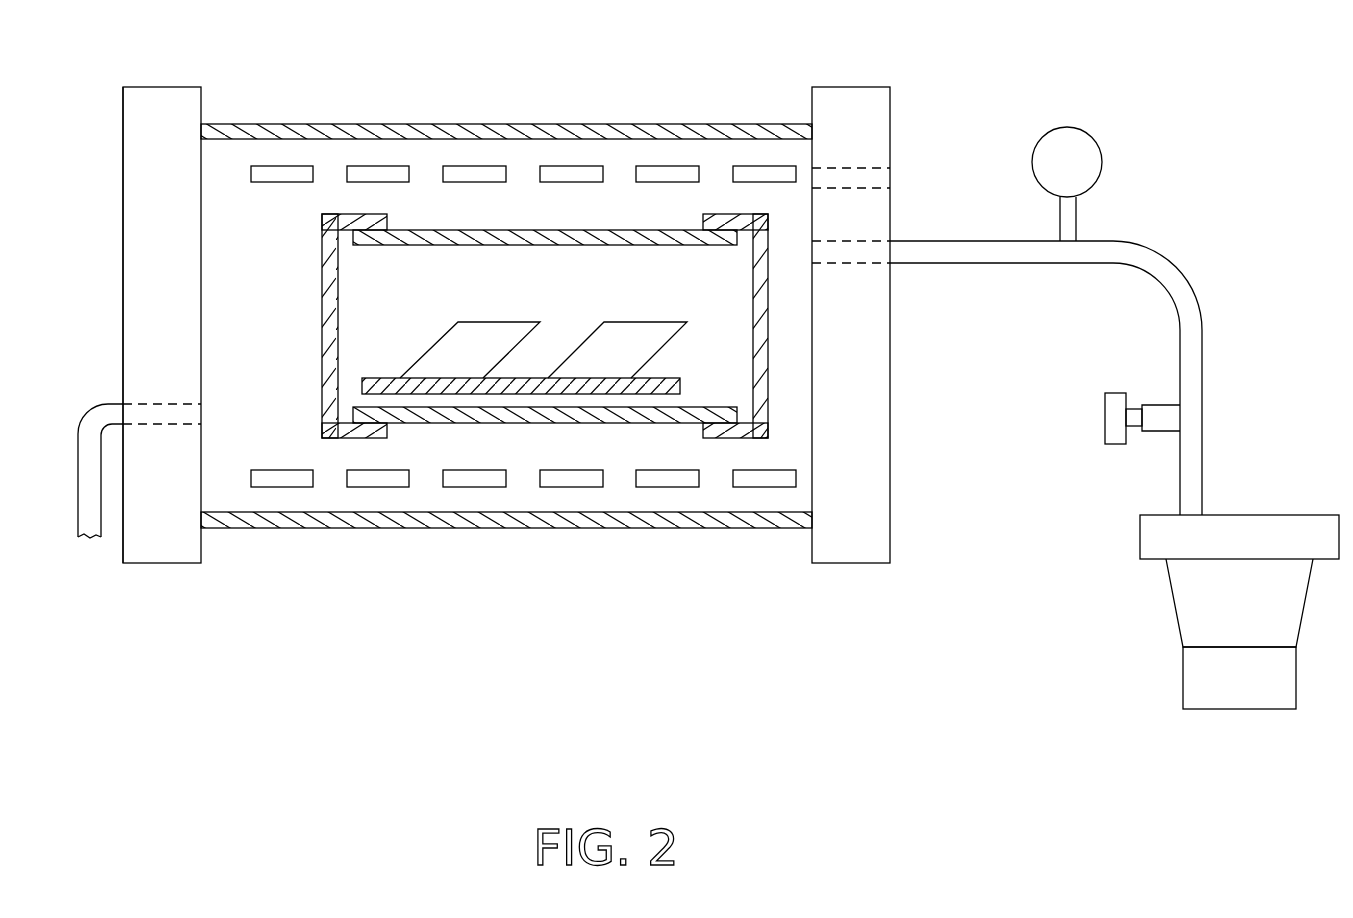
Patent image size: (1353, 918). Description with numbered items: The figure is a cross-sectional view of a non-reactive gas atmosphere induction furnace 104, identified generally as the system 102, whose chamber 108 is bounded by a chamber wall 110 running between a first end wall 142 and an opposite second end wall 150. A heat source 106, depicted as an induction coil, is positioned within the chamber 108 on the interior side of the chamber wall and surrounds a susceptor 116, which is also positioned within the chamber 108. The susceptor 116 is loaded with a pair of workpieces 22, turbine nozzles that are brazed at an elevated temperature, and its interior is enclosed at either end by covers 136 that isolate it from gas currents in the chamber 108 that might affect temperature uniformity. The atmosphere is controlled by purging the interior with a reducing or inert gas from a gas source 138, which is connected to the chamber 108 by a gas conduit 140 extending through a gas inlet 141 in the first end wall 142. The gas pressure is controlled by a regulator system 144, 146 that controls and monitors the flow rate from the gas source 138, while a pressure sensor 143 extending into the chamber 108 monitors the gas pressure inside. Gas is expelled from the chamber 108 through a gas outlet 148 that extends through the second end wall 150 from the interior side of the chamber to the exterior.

The workpieces 22 is at (482, 358).
The furnace apparatus 102 is at (211, 616).
The furnace 104 is at (172, 87).
The heat source 106 is at (365, 165).
The chamber 108 is at (248, 323).
The furnace tube 110 is at (410, 140).
The susceptor 116 is at (608, 415).
The covers 136 is at (322, 270).
The gas source 138 is at (1175, 600).
The gas conduit 140 is at (945, 264).
The gas inlet 141 is at (850, 242).
The first end wall 142 is at (862, 87).
The pressure sensor 143 is at (865, 168).
The regulator system 144 is at (1082, 158).
The regulator system 146 is at (1115, 392).
The gas outlet 148 is at (160, 404).
The second end wall 150 is at (123, 141).